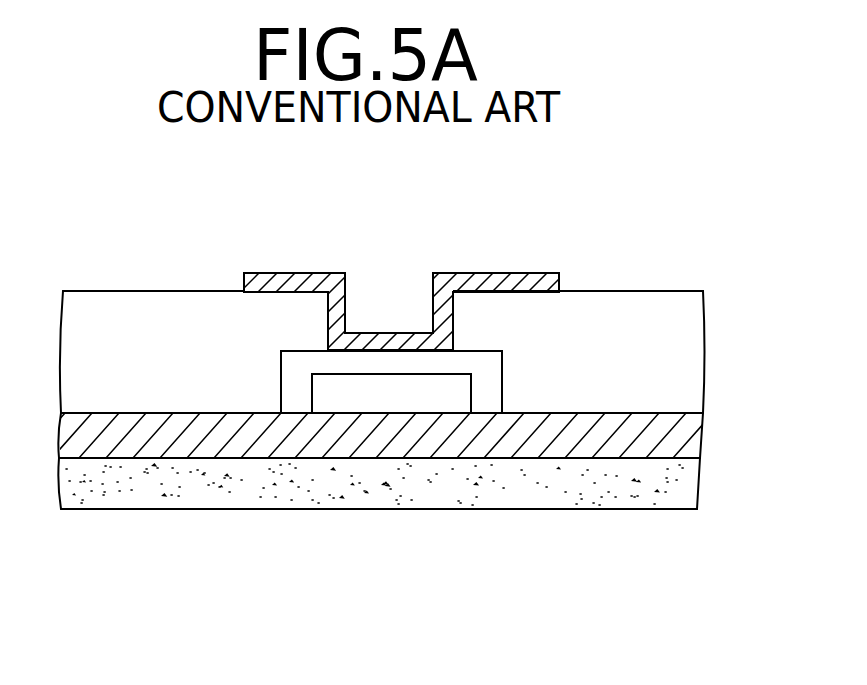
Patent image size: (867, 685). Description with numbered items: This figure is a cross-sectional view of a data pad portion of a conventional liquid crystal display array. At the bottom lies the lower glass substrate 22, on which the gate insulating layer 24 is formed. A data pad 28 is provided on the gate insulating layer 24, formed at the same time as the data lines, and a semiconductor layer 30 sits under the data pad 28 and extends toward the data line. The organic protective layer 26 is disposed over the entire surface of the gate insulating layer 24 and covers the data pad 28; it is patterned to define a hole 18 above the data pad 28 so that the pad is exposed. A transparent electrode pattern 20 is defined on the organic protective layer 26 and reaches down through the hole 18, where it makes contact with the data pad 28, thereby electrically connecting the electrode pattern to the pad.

The hole 18 is at (385, 305).
The transparent electrode pattern 20 is at (548, 273).
The lower glass substrate 22 is at (688, 490).
The gate insulating layer 24 is at (693, 440).
The organic protective layer 26 is at (703, 358).
The data pad 28 is at (290, 400).
The semiconductor layer 30 is at (397, 397).